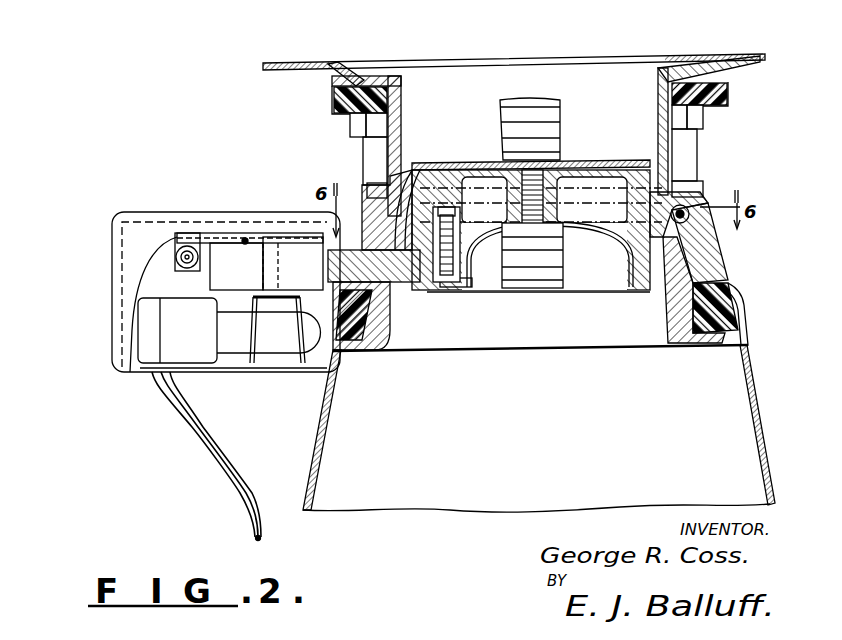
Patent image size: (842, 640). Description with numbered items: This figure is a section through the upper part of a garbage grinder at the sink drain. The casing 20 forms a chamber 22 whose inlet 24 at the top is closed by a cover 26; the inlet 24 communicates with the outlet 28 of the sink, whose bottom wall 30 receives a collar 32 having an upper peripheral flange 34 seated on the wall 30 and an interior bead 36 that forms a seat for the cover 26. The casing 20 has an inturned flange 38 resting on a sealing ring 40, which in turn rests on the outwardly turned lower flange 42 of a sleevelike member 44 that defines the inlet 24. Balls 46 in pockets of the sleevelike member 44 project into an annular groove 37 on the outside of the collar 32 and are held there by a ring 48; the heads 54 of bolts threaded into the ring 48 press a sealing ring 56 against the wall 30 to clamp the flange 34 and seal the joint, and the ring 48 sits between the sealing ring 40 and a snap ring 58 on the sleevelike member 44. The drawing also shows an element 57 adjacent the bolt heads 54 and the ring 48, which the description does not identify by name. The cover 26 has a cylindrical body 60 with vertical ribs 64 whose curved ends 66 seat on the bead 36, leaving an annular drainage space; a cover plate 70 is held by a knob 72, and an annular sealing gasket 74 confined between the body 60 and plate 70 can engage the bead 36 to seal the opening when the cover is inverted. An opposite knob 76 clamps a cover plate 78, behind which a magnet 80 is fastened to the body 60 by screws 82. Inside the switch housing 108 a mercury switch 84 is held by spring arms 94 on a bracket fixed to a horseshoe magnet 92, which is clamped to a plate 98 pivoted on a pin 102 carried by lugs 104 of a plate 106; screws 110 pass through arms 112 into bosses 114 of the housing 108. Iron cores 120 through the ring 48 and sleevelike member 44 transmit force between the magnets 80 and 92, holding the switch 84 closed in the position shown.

The casing 20 is at (318, 458).
The chamber 22 is at (536, 448).
The inlet 24 is at (534, 328).
The cover 26 is at (578, 294).
The outlet 28 is at (442, 69).
The bottom wall 30 is at (300, 63).
The collar 32 is at (404, 118).
The upper peripheral flange 34 is at (692, 65).
The interior bead 36 is at (656, 192).
The annular groove 37 is at (722, 193).
The inturned flange 38 is at (733, 302).
The sealing ring 40 is at (742, 318).
The lower flange 42 is at (731, 348).
The sleevelike member 44 is at (653, 348).
The ball 46 is at (708, 198).
The ring 48 is at (722, 282).
The heads 54 is at (352, 125).
The sealing ring 56 is at (730, 90).
The stud 57 is at (690, 143).
The snap ring 58 is at (700, 186).
The body 60 is at (618, 215).
The vertical ribs 64 is at (641, 292).
The curved ends 66 is at (676, 185).
The cover plate 70 is at (432, 165).
The knob 72 is at (522, 100).
The annular sealing gasket 74 is at (401, 175).
The knob 76 is at (523, 282).
The cover plate 78 is at (603, 252).
The magnet 80 is at (468, 273).
The screws 82 is at (432, 290).
The mercury switch 84 is at (285, 355).
The horseshoe magnet 92 is at (230, 290).
The arms 94 is at (248, 355).
The plate 98 is at (306, 244).
The pin 102 is at (185, 266).
The lugs 104 is at (175, 252).
The plate 106 is at (212, 236).
The switch housing 108 is at (115, 350).
The screws 110 is at (255, 248).
The arm 112 is at (248, 236).
The boss 114 is at (264, 234).
The iron cores 120 is at (396, 285).